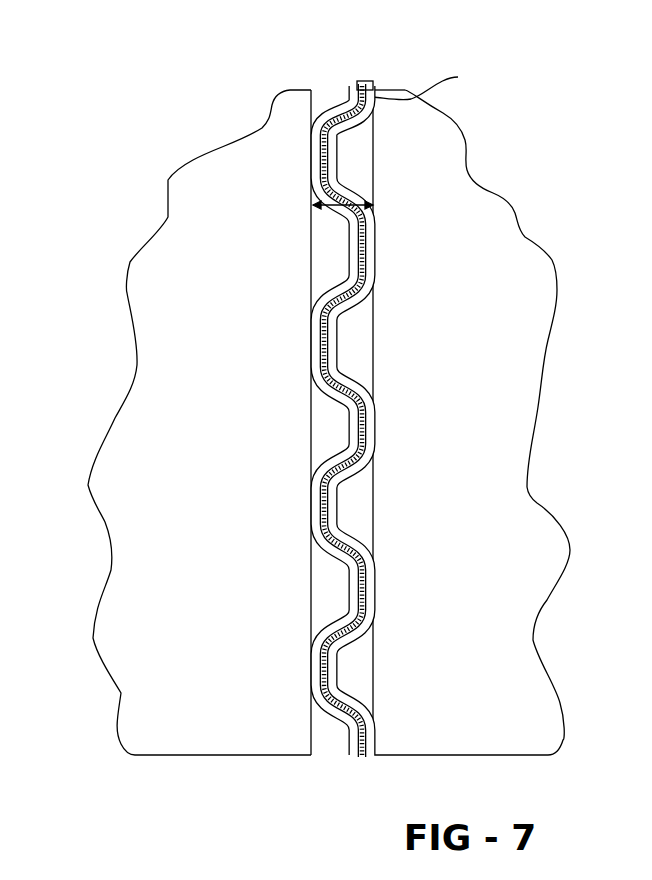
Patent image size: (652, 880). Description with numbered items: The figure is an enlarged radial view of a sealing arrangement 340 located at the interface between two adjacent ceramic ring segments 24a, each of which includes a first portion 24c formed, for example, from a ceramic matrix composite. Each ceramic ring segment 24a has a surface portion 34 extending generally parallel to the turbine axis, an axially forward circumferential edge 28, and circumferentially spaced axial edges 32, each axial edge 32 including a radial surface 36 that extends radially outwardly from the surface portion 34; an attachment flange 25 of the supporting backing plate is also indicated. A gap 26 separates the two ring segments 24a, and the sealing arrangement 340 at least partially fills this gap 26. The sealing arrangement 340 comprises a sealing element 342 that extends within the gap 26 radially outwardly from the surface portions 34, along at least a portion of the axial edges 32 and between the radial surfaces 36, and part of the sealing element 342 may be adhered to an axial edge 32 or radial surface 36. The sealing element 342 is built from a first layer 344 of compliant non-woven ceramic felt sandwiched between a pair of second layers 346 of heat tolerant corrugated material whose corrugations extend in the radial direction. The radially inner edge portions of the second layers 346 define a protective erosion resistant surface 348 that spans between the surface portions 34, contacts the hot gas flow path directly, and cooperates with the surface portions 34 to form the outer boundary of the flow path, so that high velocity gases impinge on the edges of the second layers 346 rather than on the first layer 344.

The ceramic ring segment 24a is at (314, 440).
The first portion 24c is at (196, 525).
The bottom edge of right panel 25 is at (503, 757).
The gap 26 is at (345, 205).
The axially forward circumferential edge 28 is at (231, 757).
The axial edges 32 is at (339, 420).
The surface portion 34 is at (162, 362).
The radial surface 36 is at (318, 244).
The sealing arrangement 340 is at (339, 437).
The sealing element 342 is at (323, 387).
The first layer 344 is at (365, 84).
The second layers 346 is at (353, 91).
The erosion resistant surface 348 is at (366, 588).